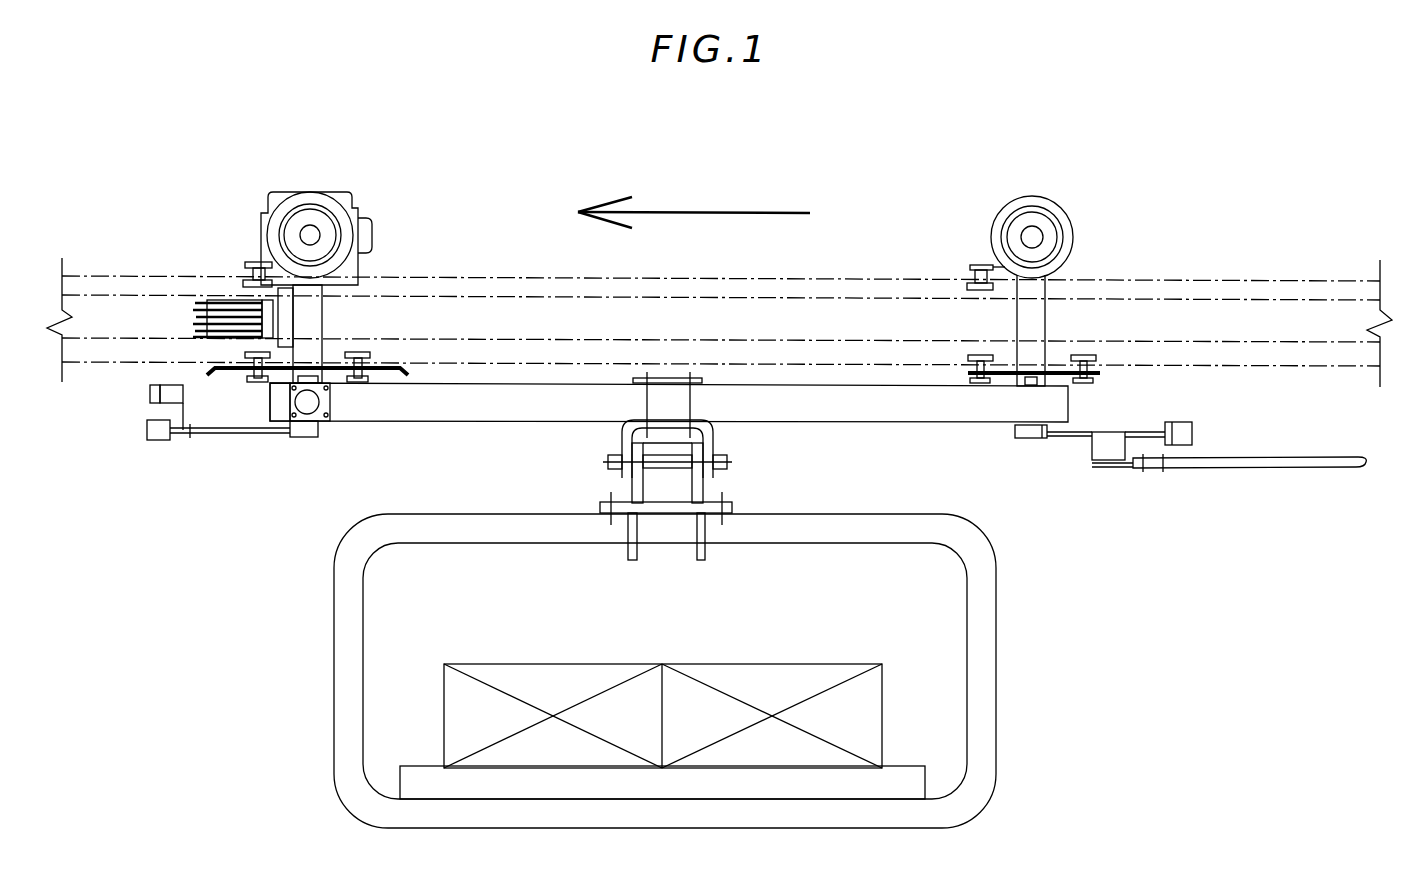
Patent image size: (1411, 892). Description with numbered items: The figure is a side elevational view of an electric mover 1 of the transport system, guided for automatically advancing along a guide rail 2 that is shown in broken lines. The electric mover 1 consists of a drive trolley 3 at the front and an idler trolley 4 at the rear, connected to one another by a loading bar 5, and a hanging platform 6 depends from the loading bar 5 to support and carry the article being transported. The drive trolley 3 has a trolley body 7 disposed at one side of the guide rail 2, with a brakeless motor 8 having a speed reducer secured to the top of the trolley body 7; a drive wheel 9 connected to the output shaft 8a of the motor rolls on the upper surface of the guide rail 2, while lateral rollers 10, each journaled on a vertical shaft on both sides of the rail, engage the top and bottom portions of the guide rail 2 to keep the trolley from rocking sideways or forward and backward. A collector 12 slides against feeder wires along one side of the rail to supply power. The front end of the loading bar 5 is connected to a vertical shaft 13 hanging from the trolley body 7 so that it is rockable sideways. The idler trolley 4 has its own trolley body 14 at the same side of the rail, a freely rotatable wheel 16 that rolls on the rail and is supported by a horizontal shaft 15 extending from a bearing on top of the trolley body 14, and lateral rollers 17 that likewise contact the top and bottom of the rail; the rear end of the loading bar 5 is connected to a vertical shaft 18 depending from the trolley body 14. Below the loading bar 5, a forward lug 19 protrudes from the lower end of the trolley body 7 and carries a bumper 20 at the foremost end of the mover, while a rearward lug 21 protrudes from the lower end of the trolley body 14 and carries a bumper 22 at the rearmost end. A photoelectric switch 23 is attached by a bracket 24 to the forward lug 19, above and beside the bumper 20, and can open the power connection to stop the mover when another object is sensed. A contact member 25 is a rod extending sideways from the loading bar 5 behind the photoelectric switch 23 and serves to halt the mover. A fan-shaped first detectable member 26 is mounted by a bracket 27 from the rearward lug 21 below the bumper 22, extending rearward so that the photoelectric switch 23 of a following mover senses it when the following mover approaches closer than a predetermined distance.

The electric mover 1 is at (669, 351).
The guide rail 2 is at (847, 317).
The drive trolley 3 is at (305, 194).
The idler trolley 4 is at (1037, 205).
The loading bar 5 is at (669, 430).
The hanging platform 6 is at (985, 663).
The trolley body 7 is at (308, 317).
The brakeless motor 8 is at (268, 203).
The output shaft 8a is at (307, 233).
The drive wheel 9 is at (322, 203).
The lateral rollers 10 is at (326, 342).
The collector 12 is at (196, 300).
The vertical shaft 13 is at (307, 414).
The trolley body 14 is at (1079, 299).
The horizontal shaft 15 is at (1028, 238).
The freely rotatable wheel 16 is at (1032, 207).
The lateral rollers 17 is at (972, 355).
The vertical shaft 18 is at (1028, 380).
The forward lug 19 is at (203, 433).
The bumper 20 is at (157, 432).
The rearward lug 21 is at (1063, 438).
The bumper 22 is at (1185, 432).
The photoelectric switch 23 is at (150, 395).
The bracket 24 is at (173, 392).
The contact member 25 is at (307, 403).
The first detectable member 26 is at (1290, 468).
The bracket 27 is at (1107, 450).